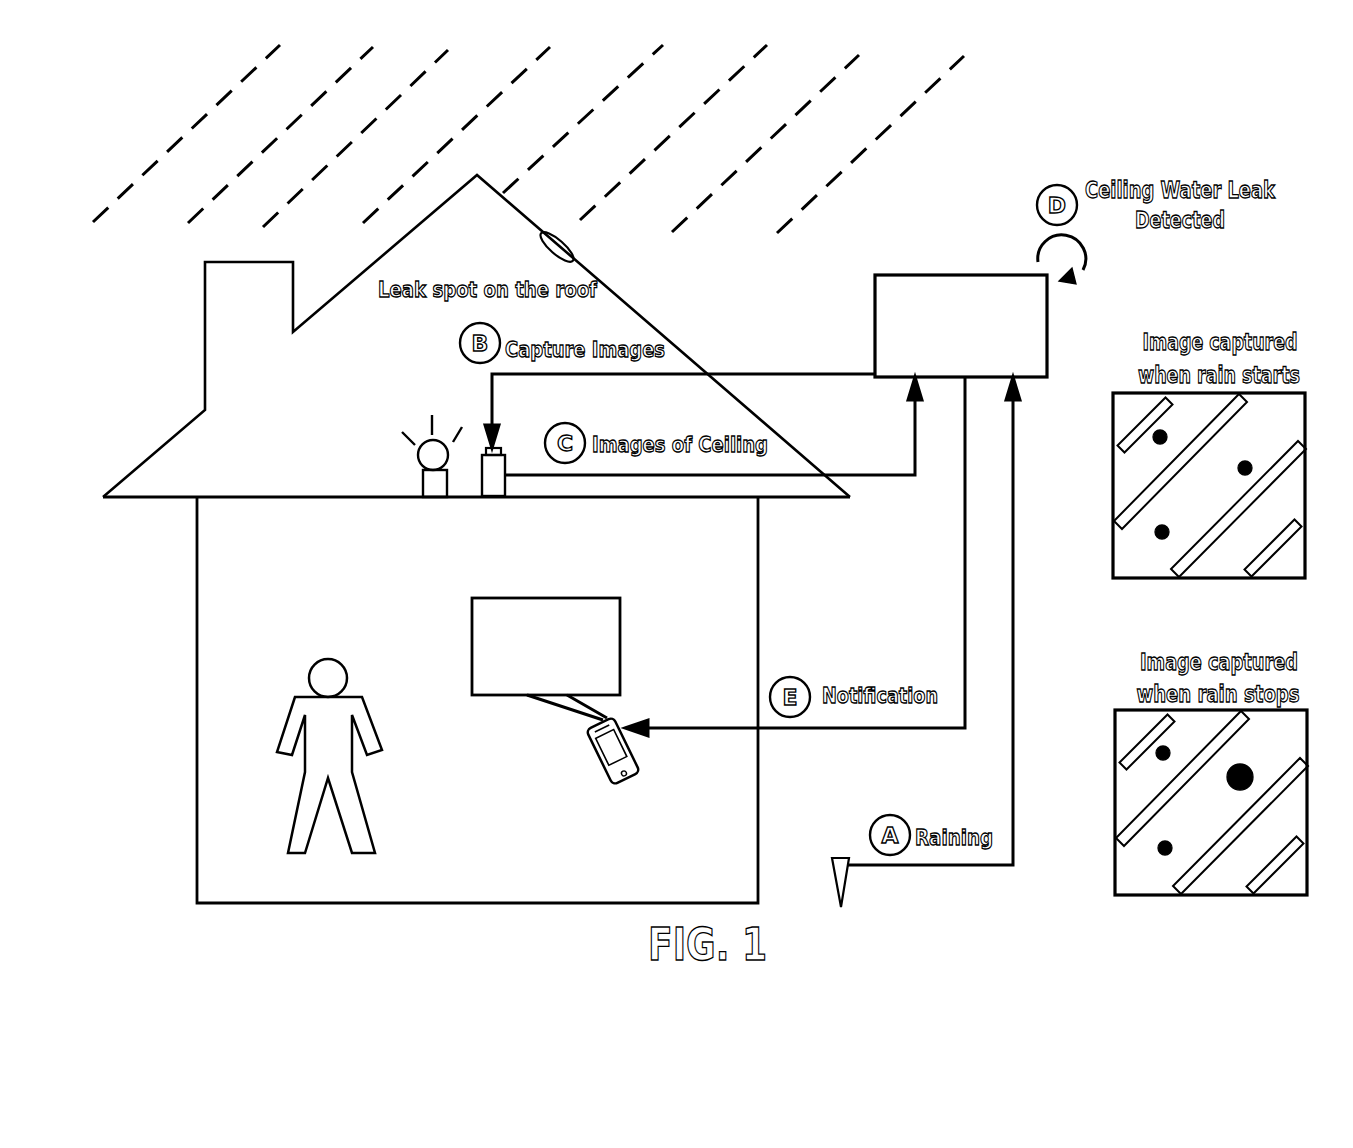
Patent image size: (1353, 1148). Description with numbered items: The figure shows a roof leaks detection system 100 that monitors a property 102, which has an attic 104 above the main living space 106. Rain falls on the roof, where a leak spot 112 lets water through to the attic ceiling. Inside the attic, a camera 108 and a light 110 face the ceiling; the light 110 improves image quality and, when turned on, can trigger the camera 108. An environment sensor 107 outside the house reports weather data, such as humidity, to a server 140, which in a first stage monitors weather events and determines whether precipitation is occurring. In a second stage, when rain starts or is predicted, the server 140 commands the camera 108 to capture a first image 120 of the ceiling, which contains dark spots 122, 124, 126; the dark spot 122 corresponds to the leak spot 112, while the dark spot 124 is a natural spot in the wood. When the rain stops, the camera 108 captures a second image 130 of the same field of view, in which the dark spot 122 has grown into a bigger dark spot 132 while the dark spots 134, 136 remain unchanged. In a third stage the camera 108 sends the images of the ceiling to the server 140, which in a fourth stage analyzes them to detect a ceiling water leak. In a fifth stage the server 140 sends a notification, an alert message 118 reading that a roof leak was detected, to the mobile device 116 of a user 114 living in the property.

The roof leaks detection system 100 is at (1165, 103).
The property 102 is at (477, 174).
The attic 104 is at (210, 483).
The main living space 106 is at (722, 881).
The environment sensor 107 is at (845, 880).
The camera 108 is at (494, 497).
The light 110 is at (421, 490).
The leak spot 112 is at (540, 254).
The user 114 is at (364, 720).
The mobile device 116 is at (610, 786).
The alert message 118 is at (505, 695).
The first image 120 is at (1207, 578).
The dark spot 122 is at (1245, 461).
The dark spot 124 is at (1156, 442).
The dark spot 126 is at (1156, 535).
The second image 130 is at (1213, 897).
The dark spot 132 is at (1248, 765).
The dark spot 134 is at (1158, 760).
The dark spot 136 is at (1159, 851).
The server 140 is at (978, 365).